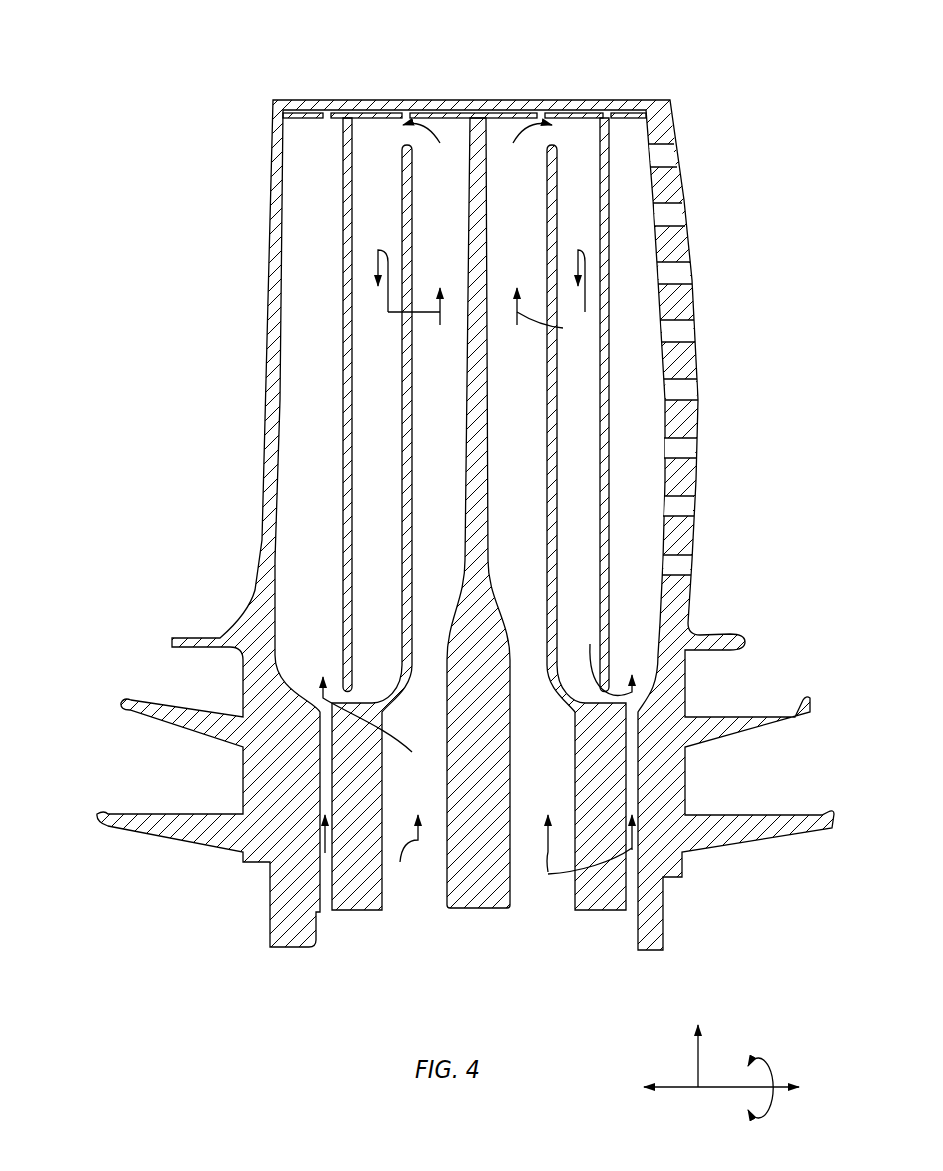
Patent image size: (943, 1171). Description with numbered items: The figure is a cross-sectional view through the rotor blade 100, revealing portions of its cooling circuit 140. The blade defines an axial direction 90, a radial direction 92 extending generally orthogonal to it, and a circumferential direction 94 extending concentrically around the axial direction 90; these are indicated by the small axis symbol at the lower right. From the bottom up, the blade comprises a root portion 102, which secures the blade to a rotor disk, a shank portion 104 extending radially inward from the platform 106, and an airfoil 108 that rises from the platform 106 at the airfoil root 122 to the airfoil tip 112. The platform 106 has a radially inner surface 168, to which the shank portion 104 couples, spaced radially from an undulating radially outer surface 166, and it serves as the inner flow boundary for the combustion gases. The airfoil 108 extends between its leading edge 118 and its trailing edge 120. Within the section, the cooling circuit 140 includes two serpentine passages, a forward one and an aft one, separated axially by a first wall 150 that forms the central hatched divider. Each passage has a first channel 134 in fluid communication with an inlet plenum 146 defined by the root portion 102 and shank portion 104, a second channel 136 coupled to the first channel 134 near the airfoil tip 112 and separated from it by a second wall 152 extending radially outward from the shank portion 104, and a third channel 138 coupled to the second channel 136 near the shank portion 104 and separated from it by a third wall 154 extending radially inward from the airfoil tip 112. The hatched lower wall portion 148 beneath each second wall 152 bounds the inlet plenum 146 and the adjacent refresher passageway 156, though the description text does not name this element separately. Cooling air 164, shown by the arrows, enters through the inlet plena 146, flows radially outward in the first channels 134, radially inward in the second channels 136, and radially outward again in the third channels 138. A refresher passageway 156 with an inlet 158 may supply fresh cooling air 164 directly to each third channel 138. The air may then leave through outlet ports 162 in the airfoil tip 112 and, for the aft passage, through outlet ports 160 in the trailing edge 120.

The axial direction 90 is at (680, 1090).
The radial direction 92 is at (700, 1052).
The circumferential direction 94 is at (767, 1079).
The rotor blade 100 is at (212, 44).
The root portion 102 is at (268, 930).
The shank portion 104 is at (243, 772).
The platform 106 is at (703, 604).
The airfoil 108 is at (268, 355).
The airfoil tip 112 is at (560, 110).
The leading edge 118 is at (271, 258).
The trailing edge 120 is at (697, 413).
The airfoil root 122 is at (222, 636).
The first channel 134 is at (459, 450).
The second channel 136 is at (393, 450).
The third channel 138 is at (326, 450).
The cooling circuit 140 is at (305, 190).
The inlet plenum 146 is at (423, 917).
The lower wall portion 148 is at (370, 911).
The first wall 150 is at (488, 576).
The second wall 152 is at (413, 626).
The third wall 154 is at (353, 578).
The refresher passageway 156 is at (323, 787).
The inlet 158 is at (327, 920).
The outlet ports 160 is at (660, 155).
The outlet ports 162 is at (327, 112).
The cooling air 164 is at (477, 504).
The radially outer surface 166 is at (723, 633).
The radially inner surface 168 is at (727, 646).